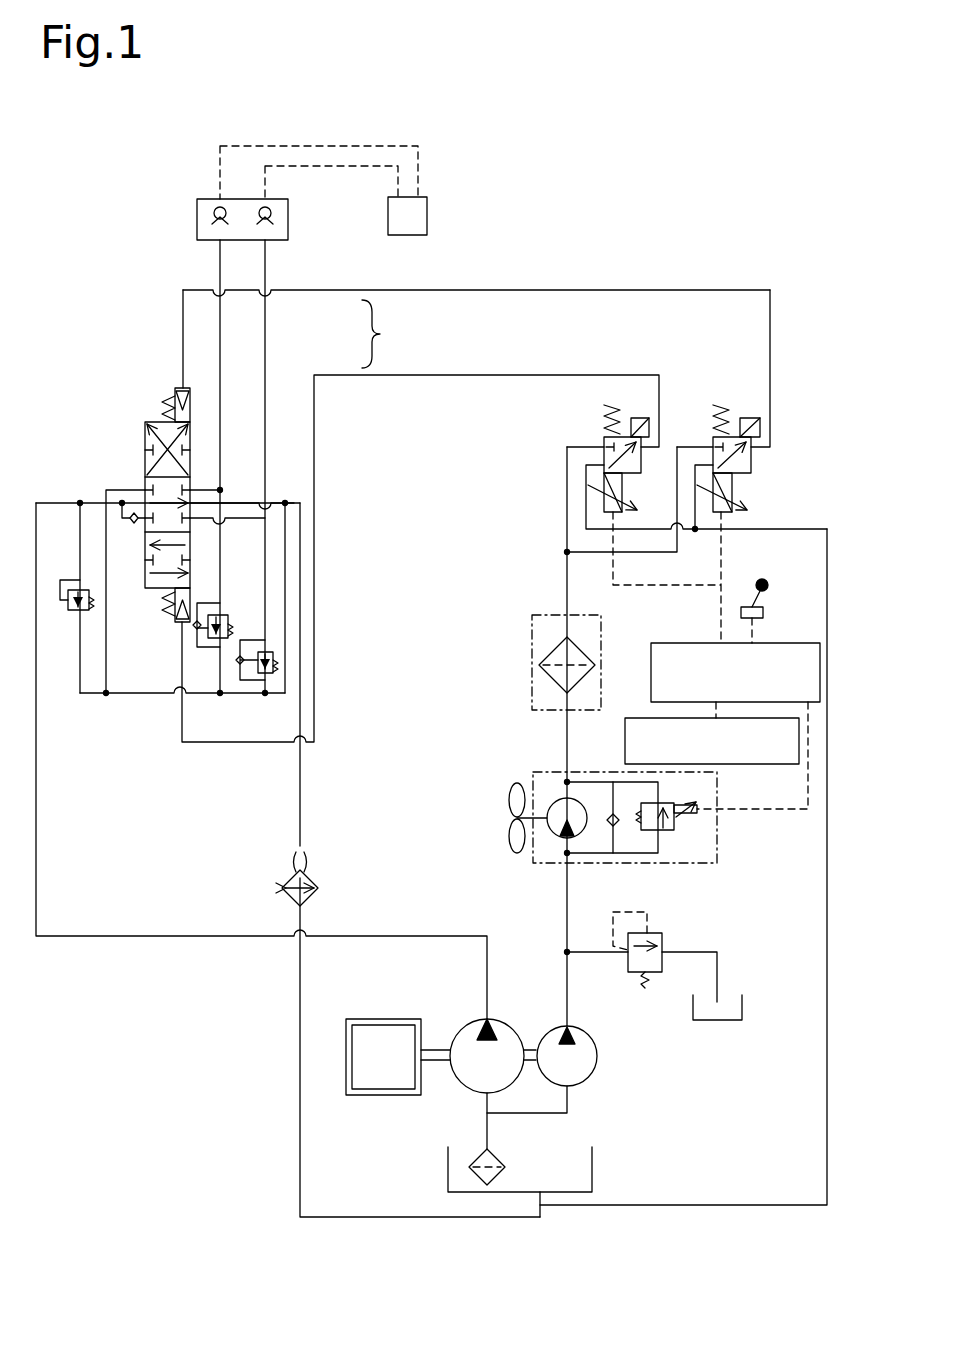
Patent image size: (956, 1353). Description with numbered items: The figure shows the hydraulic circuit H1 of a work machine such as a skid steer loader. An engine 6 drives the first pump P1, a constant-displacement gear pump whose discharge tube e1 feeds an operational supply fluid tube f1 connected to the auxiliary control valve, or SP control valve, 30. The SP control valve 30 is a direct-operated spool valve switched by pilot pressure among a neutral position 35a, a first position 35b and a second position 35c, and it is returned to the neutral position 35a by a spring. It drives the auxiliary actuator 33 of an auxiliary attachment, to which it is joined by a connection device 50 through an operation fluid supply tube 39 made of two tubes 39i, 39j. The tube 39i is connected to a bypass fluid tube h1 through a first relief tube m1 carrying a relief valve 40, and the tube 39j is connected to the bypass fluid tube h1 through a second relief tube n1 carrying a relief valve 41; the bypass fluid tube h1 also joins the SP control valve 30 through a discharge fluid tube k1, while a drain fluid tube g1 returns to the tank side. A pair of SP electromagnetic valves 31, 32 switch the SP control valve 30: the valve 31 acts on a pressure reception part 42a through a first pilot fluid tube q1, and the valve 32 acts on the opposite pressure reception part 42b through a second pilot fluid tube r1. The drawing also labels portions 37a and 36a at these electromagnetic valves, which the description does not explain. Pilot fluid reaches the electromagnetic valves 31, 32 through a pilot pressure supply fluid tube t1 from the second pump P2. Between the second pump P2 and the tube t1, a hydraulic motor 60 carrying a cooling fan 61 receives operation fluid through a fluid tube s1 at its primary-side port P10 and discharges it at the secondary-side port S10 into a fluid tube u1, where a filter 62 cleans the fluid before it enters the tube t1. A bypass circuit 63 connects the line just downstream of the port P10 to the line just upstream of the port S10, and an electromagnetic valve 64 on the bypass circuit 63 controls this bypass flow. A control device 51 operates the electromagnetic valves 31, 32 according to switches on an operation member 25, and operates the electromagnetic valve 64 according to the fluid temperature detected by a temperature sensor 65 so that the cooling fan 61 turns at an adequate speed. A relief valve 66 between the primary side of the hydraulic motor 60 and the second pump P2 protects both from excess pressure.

The hydraulic circuit H1 is at (593, 185).
The connection device 50 is at (197, 222).
The auxiliary actuator 33 is at (428, 214).
The SP control valve 30 is at (142, 412).
The neutral position 35a is at (143, 480).
The first position 35b is at (140, 447).
The second position 35c is at (146, 592).
The pressure reception part 42a is at (170, 388).
The pressure reception part 42b is at (177, 624).
The operation fluid supply tube 39 is at (386, 334).
The tube 39i is at (220, 318).
The tube 39j is at (265, 360).
The first pilot fluid tube q1 is at (581, 292).
The SP electromagnetic valve 32 is at (638, 418).
The SP electromagnetic valve 31 is at (749, 418).
The variable restrictor 37a is at (612, 485).
The variable restrictor 36a is at (723, 485).
The discharge tube e1 is at (55, 503).
The operational supply fluid tube f1 is at (88, 503).
The discharge fluid tube k1 is at (108, 588).
The first relief tube m1 is at (247, 554).
The second relief tube n1 is at (266, 630).
The bypass fluid tube h1 is at (138, 696).
The second pilot fluid tube r1 is at (258, 744).
The relief valve 40 is at (224, 614).
The relief valve 41 is at (270, 678).
The pilot pressure supply fluid tube t1 is at (567, 576).
The filter 62 is at (531, 637).
The control device 51 is at (663, 643).
The operation member 25 is at (763, 613).
The temperature sensor 65 is at (773, 764).
The fluid tube u1 is at (565, 742).
The port S10 is at (568, 780).
The cooling fan 61 is at (510, 812).
The hydraulic motor 60 is at (553, 835).
The bypass circuit 63 is at (633, 853).
The electromagnetic valve 64 is at (674, 830).
The port P10 is at (567, 865).
The fluid tube s1 is at (565, 923).
The relief valve 66 is at (628, 967).
The first pump P1 is at (458, 1032).
The second pump P2 is at (543, 1032).
The engine 6 is at (373, 1020).
The drain fluid tube g1 is at (370, 1217).